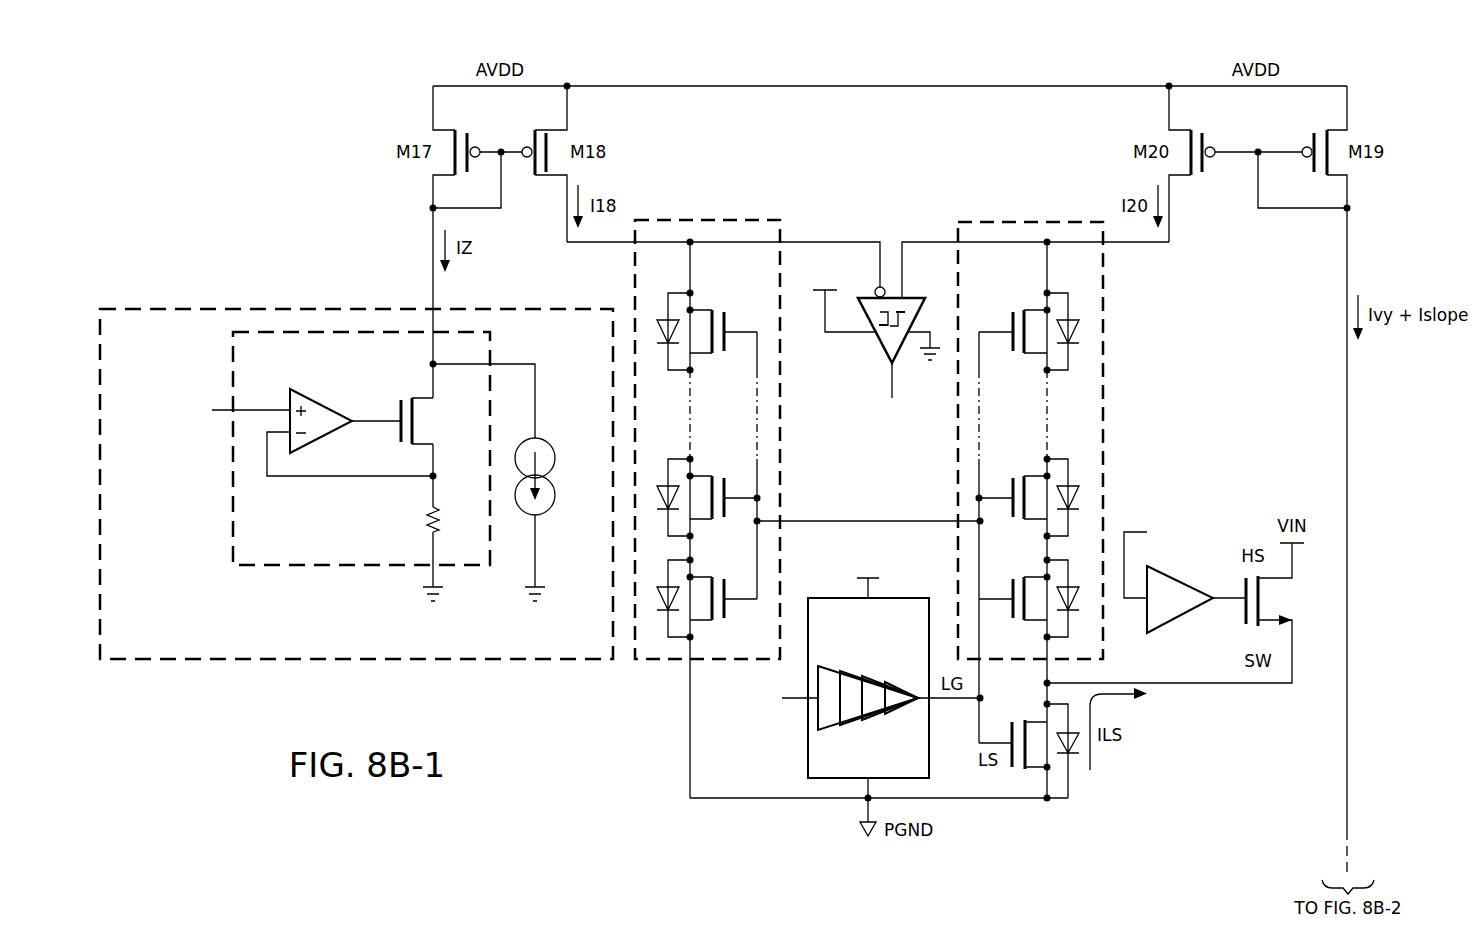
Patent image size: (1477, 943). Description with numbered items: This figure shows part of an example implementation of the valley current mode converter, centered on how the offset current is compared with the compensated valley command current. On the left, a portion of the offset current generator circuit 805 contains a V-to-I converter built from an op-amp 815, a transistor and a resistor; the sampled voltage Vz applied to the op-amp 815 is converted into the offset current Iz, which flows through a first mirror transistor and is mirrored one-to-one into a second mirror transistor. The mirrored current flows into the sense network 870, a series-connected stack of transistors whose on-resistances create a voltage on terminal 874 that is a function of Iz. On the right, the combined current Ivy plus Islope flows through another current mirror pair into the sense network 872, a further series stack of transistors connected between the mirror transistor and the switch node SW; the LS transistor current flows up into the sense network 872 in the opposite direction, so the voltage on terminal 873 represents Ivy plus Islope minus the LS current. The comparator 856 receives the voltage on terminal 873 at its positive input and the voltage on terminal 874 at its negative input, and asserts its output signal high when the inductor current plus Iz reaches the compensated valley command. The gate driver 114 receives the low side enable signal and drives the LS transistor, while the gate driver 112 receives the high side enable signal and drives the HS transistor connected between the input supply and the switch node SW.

The offset current generator circuit 805 is at (263, 304).
The op-amp 815 is at (323, 400).
The sense network 870 is at (696, 216).
The sense network 872 is at (1040, 216).
The terminal 874 is at (695, 248).
The terminal 873 is at (1040, 248).
The comparator 856 is at (880, 349).
The low side gate driver 114 is at (808, 741).
The high side gate driver 112 is at (1180, 617).